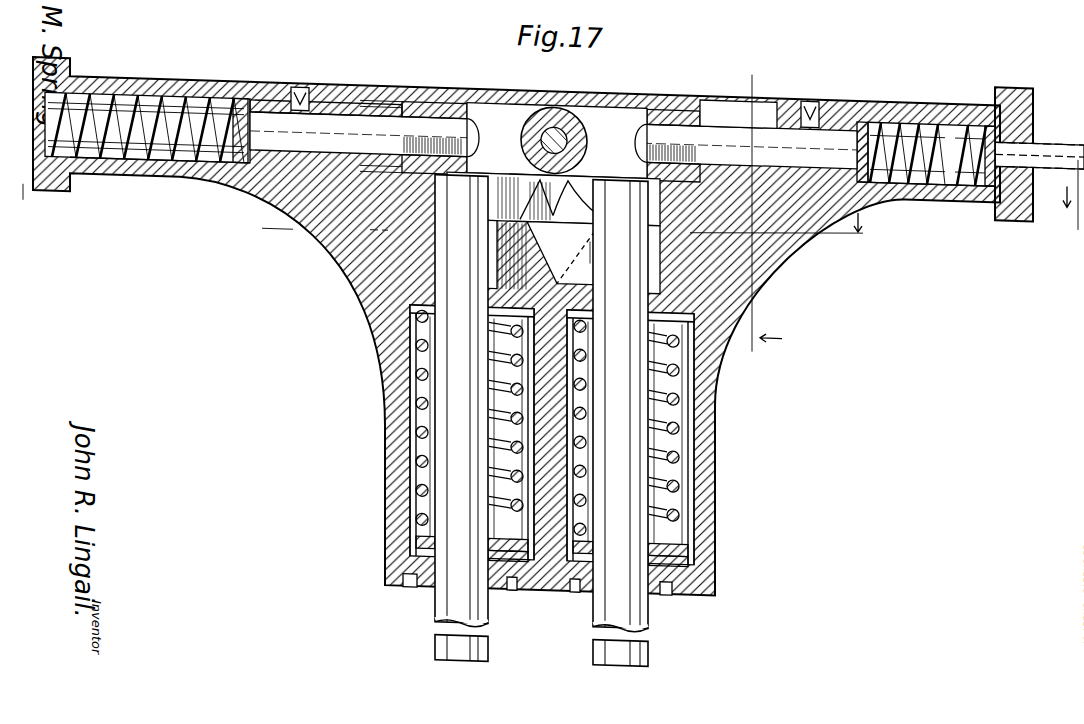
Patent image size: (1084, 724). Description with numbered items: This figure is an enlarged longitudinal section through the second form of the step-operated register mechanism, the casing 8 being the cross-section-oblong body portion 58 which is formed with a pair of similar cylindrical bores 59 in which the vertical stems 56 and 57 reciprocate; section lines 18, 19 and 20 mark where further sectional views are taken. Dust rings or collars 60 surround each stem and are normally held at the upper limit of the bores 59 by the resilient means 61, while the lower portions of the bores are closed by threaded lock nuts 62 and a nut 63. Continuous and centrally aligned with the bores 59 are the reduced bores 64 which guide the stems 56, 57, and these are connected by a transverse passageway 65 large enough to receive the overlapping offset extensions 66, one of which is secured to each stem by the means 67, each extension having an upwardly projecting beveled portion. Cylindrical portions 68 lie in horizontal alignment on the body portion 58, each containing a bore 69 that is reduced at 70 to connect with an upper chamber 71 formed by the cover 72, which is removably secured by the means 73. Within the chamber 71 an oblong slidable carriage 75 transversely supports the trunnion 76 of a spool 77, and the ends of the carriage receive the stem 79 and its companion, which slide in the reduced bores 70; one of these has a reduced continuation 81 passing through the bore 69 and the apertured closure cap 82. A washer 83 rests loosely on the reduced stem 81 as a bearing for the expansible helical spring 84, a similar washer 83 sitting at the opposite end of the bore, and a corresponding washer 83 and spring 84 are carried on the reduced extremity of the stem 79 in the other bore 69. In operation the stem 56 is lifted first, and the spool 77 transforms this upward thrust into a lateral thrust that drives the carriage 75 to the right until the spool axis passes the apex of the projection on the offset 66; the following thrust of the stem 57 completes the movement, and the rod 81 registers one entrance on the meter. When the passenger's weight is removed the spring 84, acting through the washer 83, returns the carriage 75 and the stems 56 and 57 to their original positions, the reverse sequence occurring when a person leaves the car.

The housing slot 8 is at (725, 100).
The section line 18— 18 is at (547, 192).
The section line 19— 19 is at (560, 226).
The section line 20— 20 is at (760, 218).
The stem 56 is at (458, 528).
The stem 57 is at (640, 506).
The body portion 58 is at (400, 330).
The cylindrical bores 59 is at (420, 470).
The dust rings or collars 60 is at (425, 335).
The resilient means 61 is at (410, 442).
The lock nuts 62 is at (408, 558).
The nut 63 is at (412, 592).
The reduced bores 64 is at (470, 237).
The transverse passageway 65 is at (553, 199).
The offset extensions 66 is at (572, 254).
The securing means 67 is at (470, 273).
The cylindrical portions 68 is at (216, 190).
The bore 69 is at (137, 112).
The reduced bore 70 is at (328, 118).
The upper chamber 71 is at (372, 112).
The cover 72 is at (620, 92).
The securing means 73 is at (297, 96).
The slidable carriage 75 is at (557, 141).
The trunnion 76 is at (562, 132).
The spool 77 is at (536, 118).
The stem 79 is at (268, 118).
The reduced continuation 81 is at (1048, 130).
The closure cap 82 is at (1005, 202).
The washer 83 is at (243, 120).
The helical spring 84 is at (125, 165).